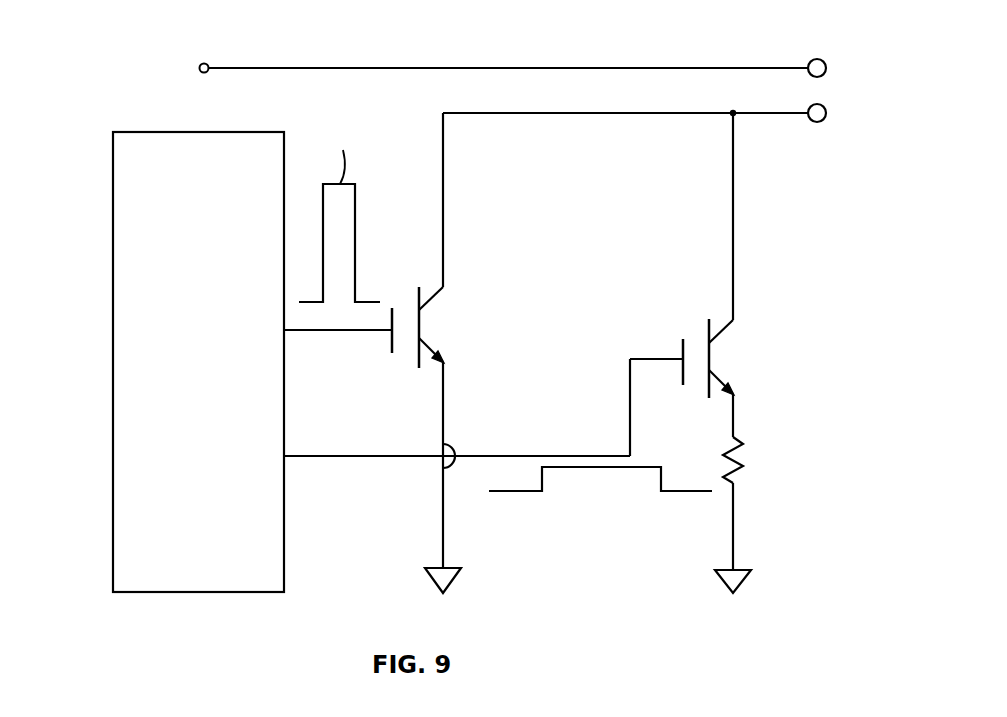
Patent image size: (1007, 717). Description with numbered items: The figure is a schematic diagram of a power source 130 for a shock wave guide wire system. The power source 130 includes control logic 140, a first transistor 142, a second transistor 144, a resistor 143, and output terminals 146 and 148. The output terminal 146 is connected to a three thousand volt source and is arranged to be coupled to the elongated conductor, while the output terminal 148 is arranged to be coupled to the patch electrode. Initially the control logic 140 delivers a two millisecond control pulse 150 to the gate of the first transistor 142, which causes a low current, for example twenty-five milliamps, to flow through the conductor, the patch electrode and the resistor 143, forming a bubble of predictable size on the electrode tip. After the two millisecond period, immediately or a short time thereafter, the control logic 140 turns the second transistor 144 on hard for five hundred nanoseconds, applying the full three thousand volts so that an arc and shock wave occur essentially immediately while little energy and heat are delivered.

The power source 130 is at (122, 112).
The control logic 140 is at (113, 297).
The first transistor 142 is at (741, 342).
The resistor 143 is at (741, 452).
The second transistor 144 is at (447, 322).
The output terminal 146 is at (815, 59).
The output terminal 148 is at (817, 122).
The control pulse 150 is at (605, 478).